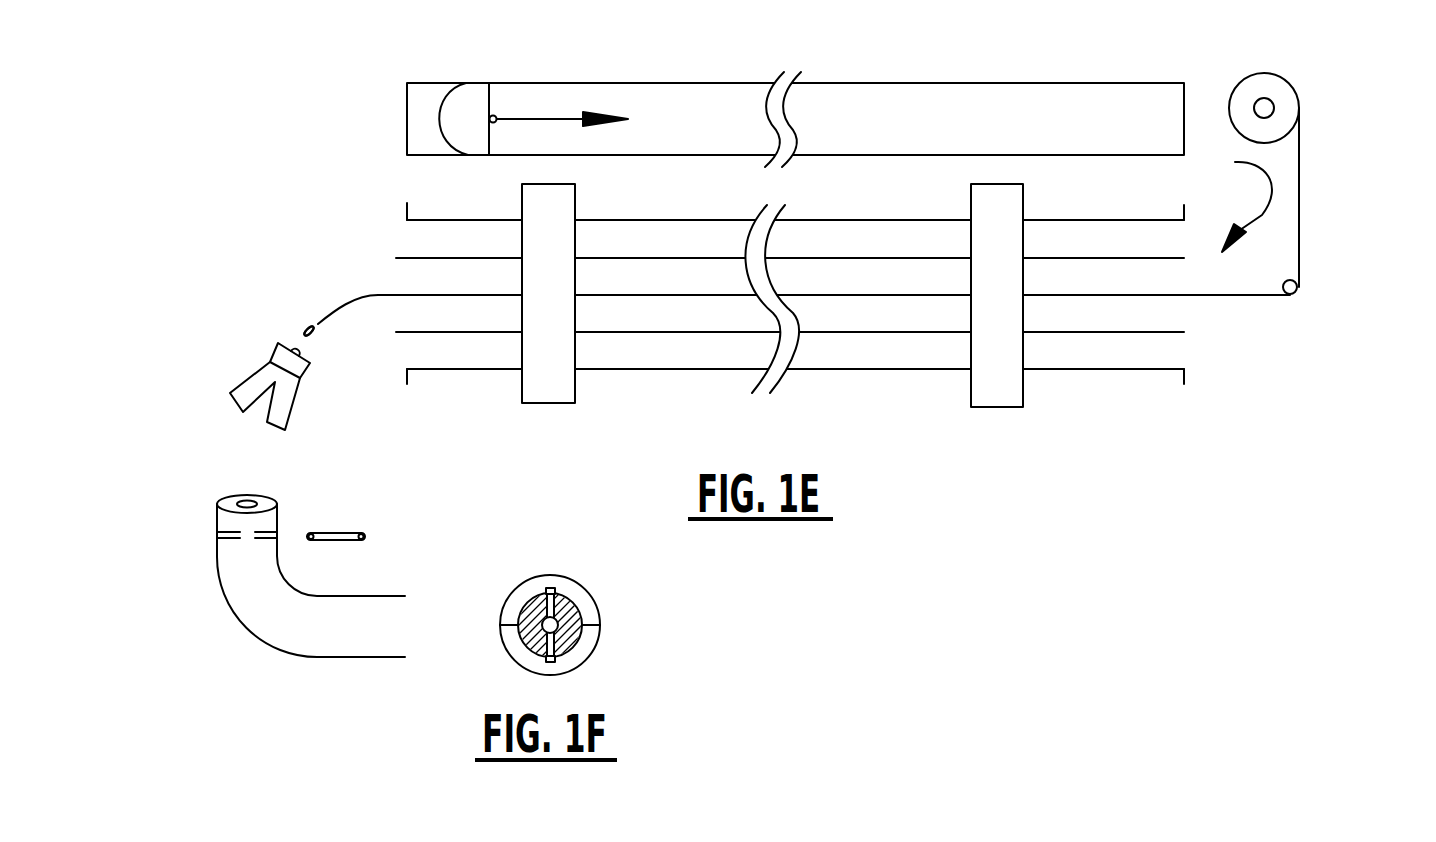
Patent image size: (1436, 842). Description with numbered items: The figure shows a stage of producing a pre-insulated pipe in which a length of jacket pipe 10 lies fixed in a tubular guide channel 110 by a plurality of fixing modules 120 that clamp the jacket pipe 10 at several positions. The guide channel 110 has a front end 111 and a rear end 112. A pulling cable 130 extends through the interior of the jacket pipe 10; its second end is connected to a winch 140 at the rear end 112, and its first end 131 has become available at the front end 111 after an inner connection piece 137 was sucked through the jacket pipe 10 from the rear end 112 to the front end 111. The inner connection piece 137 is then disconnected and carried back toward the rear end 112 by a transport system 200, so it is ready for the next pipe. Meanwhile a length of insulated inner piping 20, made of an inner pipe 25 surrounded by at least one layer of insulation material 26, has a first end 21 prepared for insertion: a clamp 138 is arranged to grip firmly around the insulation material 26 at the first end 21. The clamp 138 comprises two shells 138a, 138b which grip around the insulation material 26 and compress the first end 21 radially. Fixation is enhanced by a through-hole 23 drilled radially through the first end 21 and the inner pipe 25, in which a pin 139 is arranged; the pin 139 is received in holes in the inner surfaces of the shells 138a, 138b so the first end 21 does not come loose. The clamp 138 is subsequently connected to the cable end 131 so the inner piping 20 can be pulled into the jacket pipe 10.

In FIG. 1E, the jacket pipe 10 is at (695, 330).
In FIG. 1E, the insulated inner piping 20 is at (360, 650).
In FIG. 1E, the first end 21 is at (259, 545).
In FIG. 1E, the through-hole 23 is at (170, 536).
In FIG. 1E, the inner pipe 25 is at (247, 500).
In FIG. 1F, the inner pipe 25 is at (547, 627).
In FIG. 1E, the insulation material 26 is at (272, 500).
In FIG. 1F, the insulation material 26 is at (530, 608).
In FIG. 1E, the guide channel 110 is at (682, 220).
In FIG. 1E, the front end 111 is at (830, 250).
In FIG. 1E, the rear end 112 is at (1232, 199).
In FIG. 1E, the fixing modules 120 is at (560, 203).
In FIG. 1E, the pulling cable 130 is at (1302, 207).
In FIG. 1E, the first end 131 is at (266, 290).
In FIG. 1E, the inner connection piece 137 is at (463, 100).
In FIG. 1E, the clamp 138 is at (190, 352).
In FIG. 1F, the clamp shell 138a is at (585, 597).
In FIG. 1F, the clamp shell 138b is at (585, 652).
In FIG. 1E, the pin 139 is at (340, 533).
In FIG. 1F, the pin 139 is at (549, 585).
In FIG. 1E, the winch 140 is at (1277, 78).
In FIG. 1E, the transport system 200 is at (712, 95).